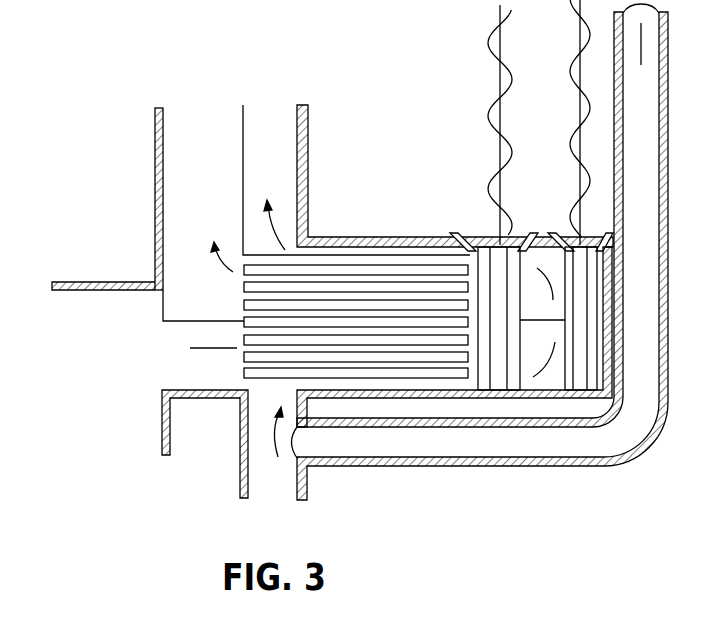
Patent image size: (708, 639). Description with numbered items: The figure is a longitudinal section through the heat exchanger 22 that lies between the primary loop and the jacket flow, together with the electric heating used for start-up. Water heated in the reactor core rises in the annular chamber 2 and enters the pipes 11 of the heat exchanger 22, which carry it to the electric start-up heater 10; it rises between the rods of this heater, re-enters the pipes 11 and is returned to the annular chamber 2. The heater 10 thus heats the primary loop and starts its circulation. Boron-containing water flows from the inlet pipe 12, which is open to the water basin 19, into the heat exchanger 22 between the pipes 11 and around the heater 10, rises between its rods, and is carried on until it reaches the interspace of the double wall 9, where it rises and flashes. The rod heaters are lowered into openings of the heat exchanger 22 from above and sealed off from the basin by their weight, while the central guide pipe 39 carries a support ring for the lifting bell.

The annular chamber 2 is at (180, 207).
The central guide pipe 39 is at (157, 263).
The double wall 9 is at (283, 187).
The heat exchanger 22 is at (399, 270).
The pipes 11 is at (425, 313).
The electric start-up heater 10 is at (502, 370).
The inlet pipe 12 is at (257, 423).
The water basin 19 is at (580, 484).